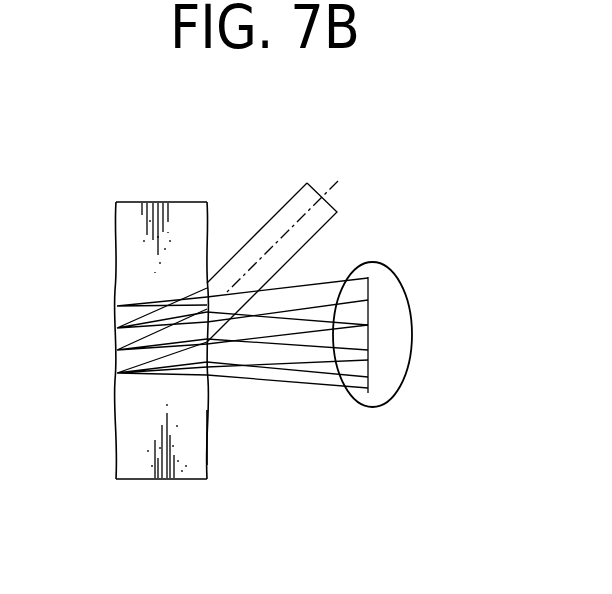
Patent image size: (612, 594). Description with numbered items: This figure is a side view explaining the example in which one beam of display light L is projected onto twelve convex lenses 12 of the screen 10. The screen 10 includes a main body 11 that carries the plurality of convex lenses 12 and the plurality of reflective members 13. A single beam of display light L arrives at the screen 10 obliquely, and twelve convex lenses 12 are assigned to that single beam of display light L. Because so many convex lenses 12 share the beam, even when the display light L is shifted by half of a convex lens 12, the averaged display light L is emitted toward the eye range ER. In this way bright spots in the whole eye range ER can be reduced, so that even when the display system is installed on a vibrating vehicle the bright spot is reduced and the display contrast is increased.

The screen 10 is at (133, 189).
The main body 11 is at (167, 481).
The convex lenses 12 is at (208, 415).
The reflective members 13 is at (116, 374).
The display light L is at (288, 200).
The eye range ER is at (413, 327).